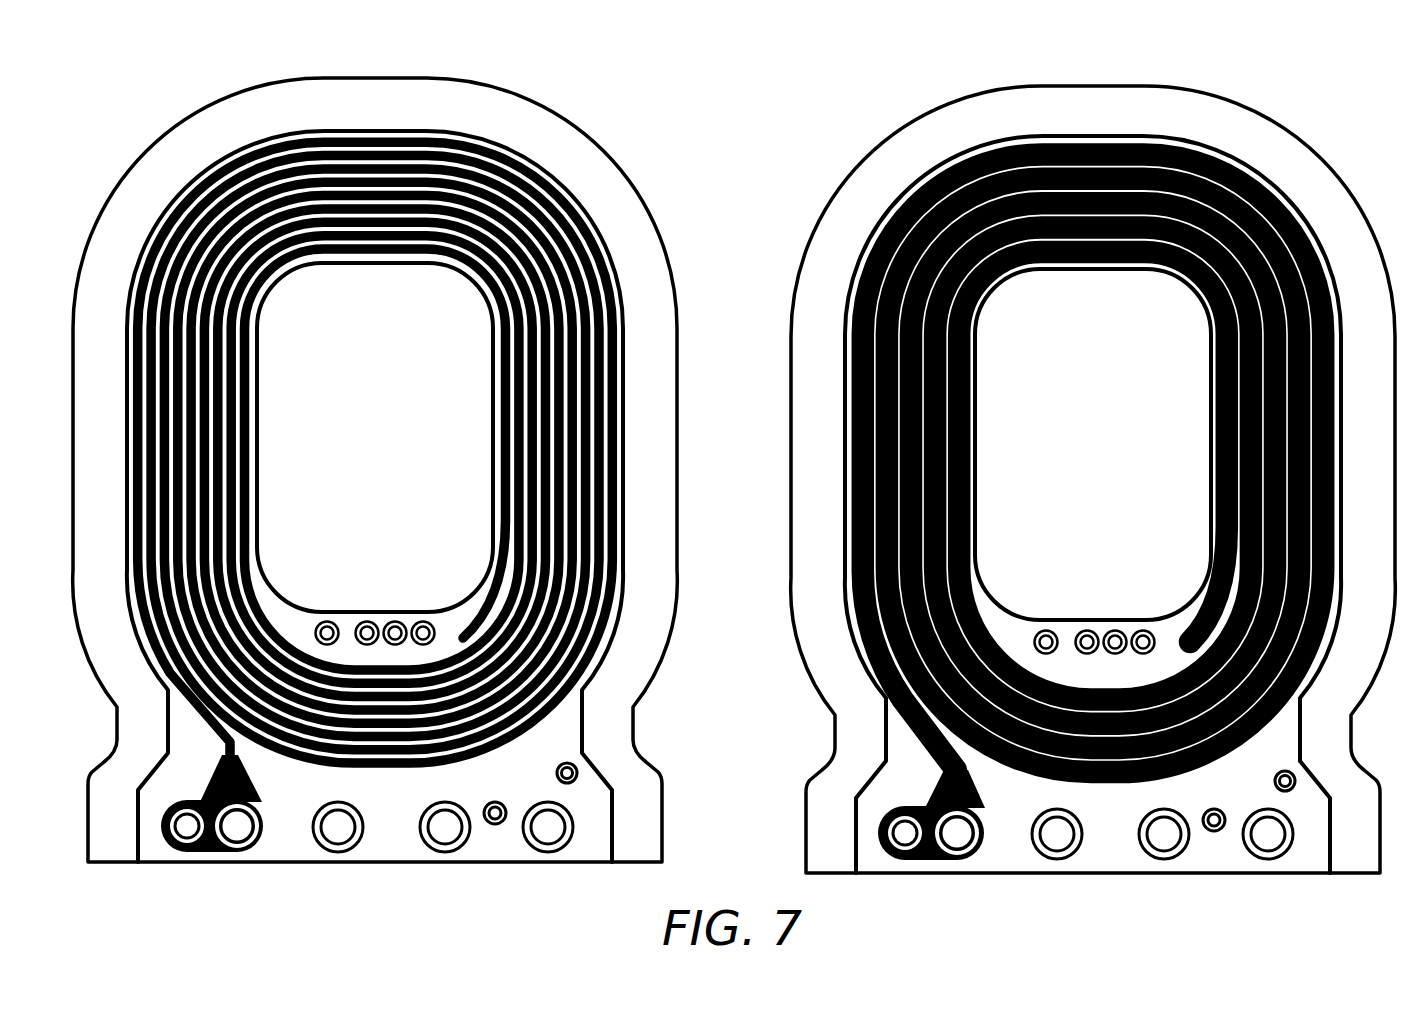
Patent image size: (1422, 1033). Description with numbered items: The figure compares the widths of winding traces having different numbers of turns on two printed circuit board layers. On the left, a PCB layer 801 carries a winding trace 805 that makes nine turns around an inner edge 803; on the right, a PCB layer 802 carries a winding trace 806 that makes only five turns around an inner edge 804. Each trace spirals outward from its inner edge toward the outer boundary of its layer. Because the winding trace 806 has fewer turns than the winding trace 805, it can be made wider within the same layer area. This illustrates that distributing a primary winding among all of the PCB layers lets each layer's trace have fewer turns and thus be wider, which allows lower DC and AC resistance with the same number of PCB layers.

The PCB layer 801 is at (228, 63).
The PCB layer 802 is at (918, 73).
The inner edge 803 is at (262, 421).
The inner edge 804 is at (980, 435).
The winding trace 805 is at (242, 776).
The winding trace 806 is at (968, 800).